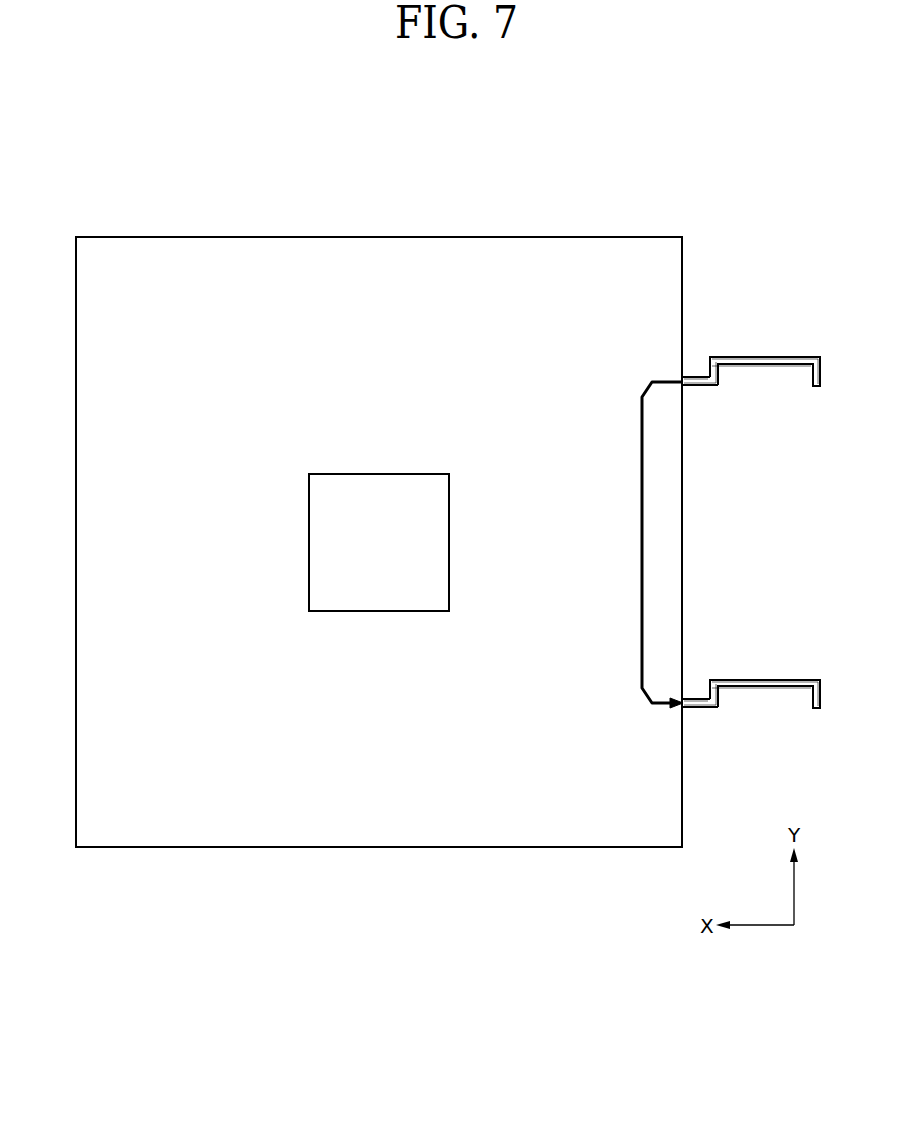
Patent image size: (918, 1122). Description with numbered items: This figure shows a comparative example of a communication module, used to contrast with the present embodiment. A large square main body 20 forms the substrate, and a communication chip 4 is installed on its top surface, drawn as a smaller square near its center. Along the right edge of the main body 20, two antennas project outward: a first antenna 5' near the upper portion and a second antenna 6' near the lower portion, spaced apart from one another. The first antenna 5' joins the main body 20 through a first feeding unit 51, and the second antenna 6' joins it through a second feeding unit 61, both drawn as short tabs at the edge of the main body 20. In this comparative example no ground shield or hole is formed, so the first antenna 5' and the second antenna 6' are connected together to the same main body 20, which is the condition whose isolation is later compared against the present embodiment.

The main body 20 is at (268, 277).
The communication chip 4 is at (381, 498).
The first feeding unit 51 is at (695, 380).
The first antenna 5' is at (765, 339).
The second feeding unit 61 is at (695, 700).
The second antenna 6' is at (765, 661).